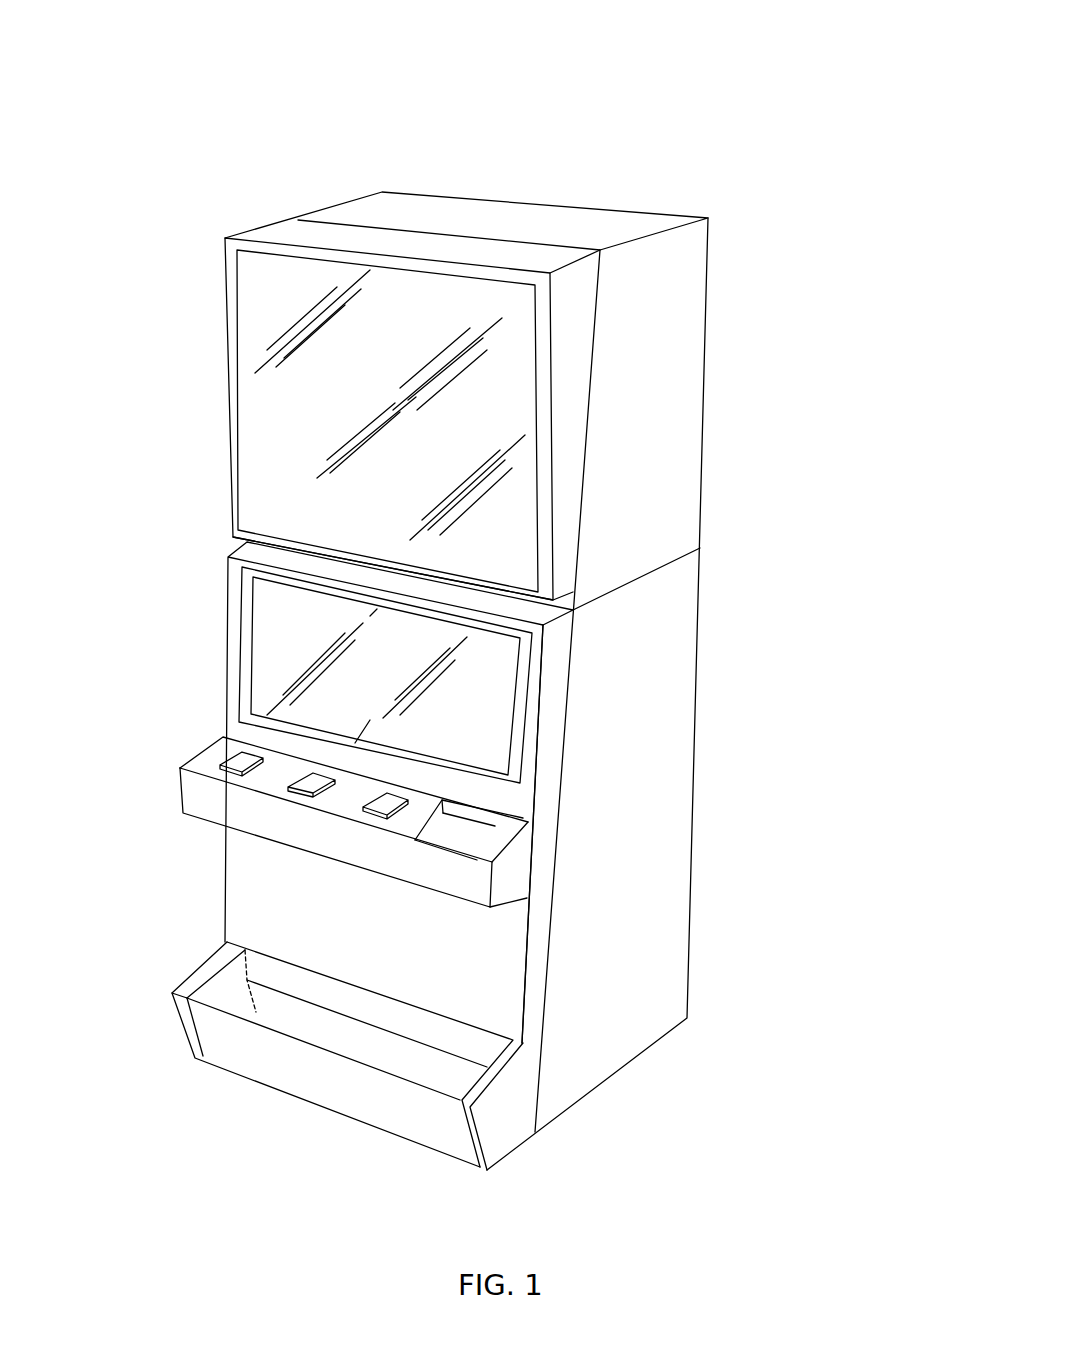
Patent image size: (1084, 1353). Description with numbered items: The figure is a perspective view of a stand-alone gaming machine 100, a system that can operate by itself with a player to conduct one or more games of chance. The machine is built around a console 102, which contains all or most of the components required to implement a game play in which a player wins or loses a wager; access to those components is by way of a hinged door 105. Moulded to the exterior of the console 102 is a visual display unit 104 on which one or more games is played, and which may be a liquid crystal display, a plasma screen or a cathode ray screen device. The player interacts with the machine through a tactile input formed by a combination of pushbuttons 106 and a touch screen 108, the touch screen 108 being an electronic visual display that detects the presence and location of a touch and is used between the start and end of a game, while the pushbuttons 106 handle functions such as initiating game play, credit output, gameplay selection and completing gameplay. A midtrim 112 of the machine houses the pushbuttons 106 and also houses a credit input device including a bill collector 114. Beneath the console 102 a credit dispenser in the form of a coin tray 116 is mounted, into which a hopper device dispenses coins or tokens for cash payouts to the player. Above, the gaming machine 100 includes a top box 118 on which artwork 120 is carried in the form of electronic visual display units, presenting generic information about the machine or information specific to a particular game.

The gaming machine 100 is at (775, 103).
The console 102 is at (669, 730).
The visual display unit 104 is at (229, 620).
The hinged door 105 is at (520, 867).
The pushbuttons 106 is at (241, 763).
The touch screen 108 is at (285, 672).
The midtrim 112 is at (186, 788).
The bill collector 114 is at (493, 812).
The coin tray 116 is at (286, 1018).
The top box 118 is at (226, 308).
The artwork 120 is at (283, 364).